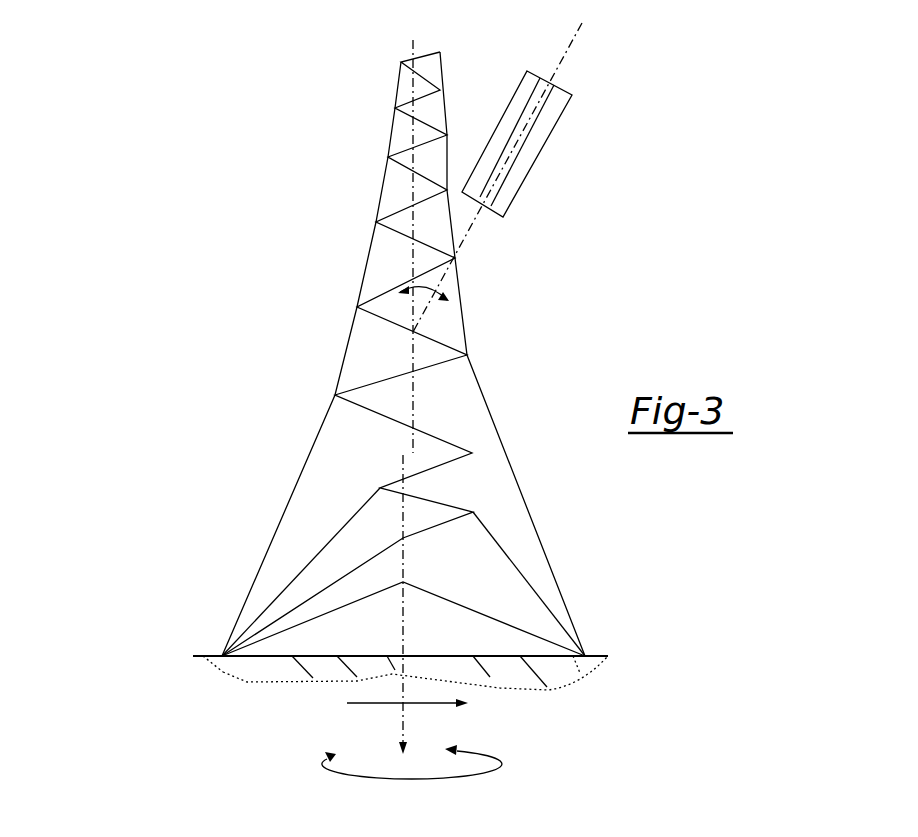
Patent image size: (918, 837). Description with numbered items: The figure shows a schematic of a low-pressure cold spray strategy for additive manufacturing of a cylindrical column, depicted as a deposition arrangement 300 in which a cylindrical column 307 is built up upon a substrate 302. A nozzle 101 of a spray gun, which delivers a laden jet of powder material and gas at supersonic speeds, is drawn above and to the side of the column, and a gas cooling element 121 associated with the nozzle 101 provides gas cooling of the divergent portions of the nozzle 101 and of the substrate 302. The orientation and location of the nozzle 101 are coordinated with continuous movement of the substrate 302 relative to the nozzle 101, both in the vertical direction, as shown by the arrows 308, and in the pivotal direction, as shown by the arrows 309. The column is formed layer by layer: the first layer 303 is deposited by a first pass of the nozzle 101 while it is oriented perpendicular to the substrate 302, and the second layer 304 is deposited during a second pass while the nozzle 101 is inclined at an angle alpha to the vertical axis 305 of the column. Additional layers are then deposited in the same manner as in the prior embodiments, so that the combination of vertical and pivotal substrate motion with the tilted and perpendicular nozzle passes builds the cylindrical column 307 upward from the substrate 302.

The deposition arrangement 300 is at (93, 87).
The vertical axis 305 is at (413, 42).
The cylindrical column 307 is at (358, 97).
The second layer 304 is at (521, 596).
The first layer 303 is at (502, 690).
The substrate 302 is at (280, 672).
The arrows indicating vertical movement 308 is at (430, 707).
The arrows indicating pivotal movement 309 is at (333, 768).
The nozzle 101 is at (523, 148).
The gas cooling element 121 is at (563, 108).